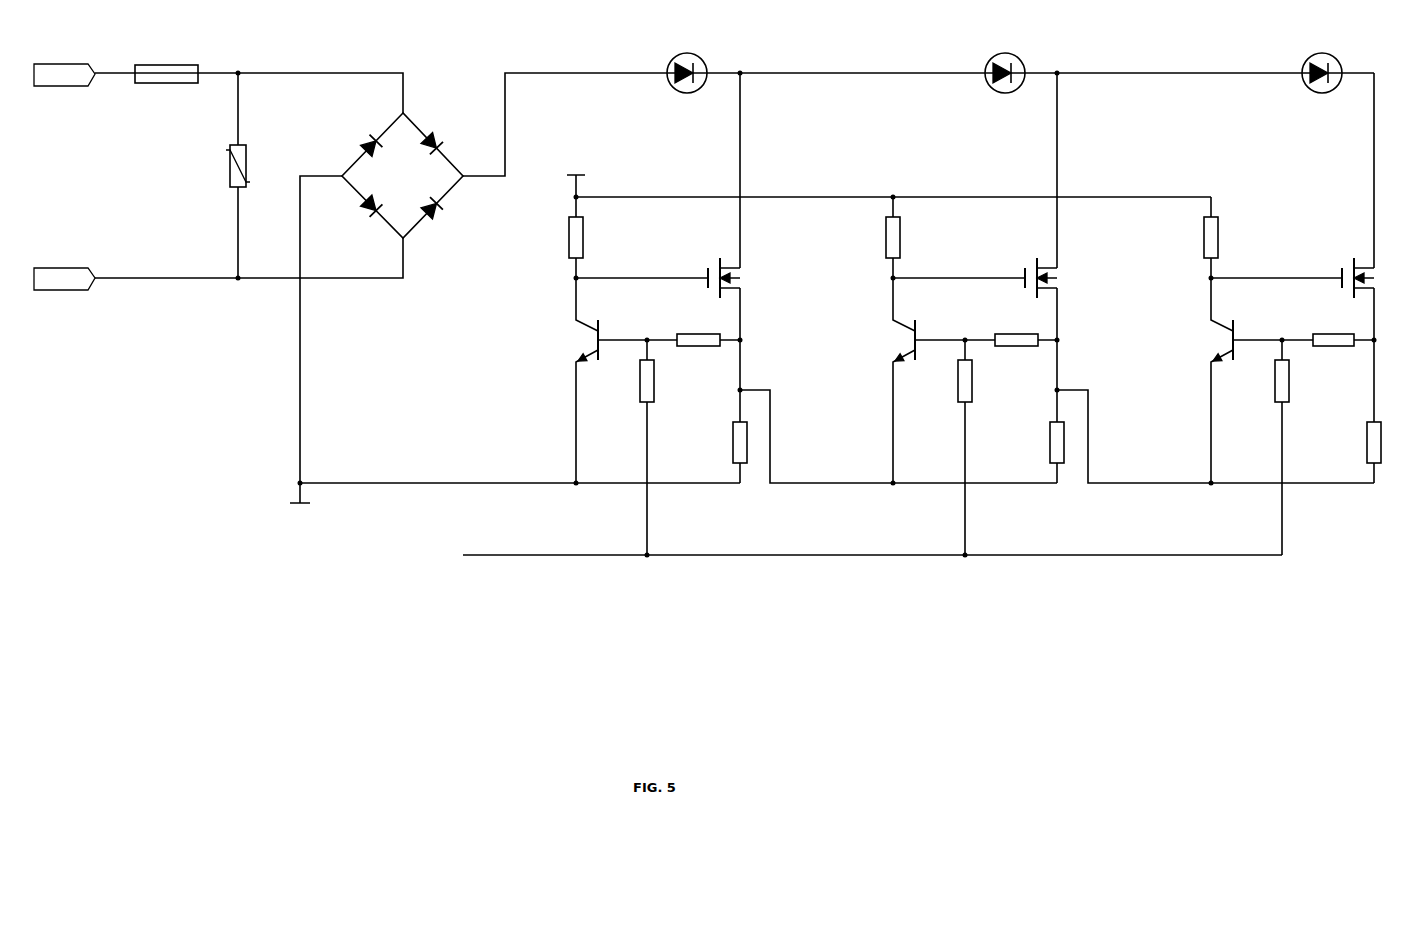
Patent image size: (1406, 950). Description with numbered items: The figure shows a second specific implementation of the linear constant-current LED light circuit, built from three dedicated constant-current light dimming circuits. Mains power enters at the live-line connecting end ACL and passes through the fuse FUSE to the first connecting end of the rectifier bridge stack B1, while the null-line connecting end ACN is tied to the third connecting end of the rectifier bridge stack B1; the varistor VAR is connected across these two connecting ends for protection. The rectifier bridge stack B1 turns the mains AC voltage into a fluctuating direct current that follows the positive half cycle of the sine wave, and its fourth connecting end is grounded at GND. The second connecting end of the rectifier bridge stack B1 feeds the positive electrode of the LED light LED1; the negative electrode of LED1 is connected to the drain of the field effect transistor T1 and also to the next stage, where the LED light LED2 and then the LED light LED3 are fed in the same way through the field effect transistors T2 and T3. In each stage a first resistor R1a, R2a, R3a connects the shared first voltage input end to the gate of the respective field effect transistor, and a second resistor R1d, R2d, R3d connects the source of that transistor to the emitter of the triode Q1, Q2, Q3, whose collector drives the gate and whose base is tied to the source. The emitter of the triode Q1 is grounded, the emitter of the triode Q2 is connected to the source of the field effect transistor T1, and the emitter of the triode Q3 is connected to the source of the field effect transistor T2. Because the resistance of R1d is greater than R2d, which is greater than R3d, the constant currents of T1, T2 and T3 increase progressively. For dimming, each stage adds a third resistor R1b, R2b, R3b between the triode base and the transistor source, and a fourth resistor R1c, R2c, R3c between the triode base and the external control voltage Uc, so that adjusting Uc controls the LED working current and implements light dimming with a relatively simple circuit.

The AC mains live-line connecting end ACL is at (64, 75).
The AC mains null-line connecting end ACN is at (64, 279).
The fuse FUSE is at (166, 64).
The varistor VAR is at (214, 175).
The rectifier bridge stack B1 is at (403, 174).
The ground GND is at (299, 502).
The external control voltage Uc is at (872, 542).
The LED light LED1 is at (689, 87).
The LED light LED2 is at (1007, 87).
The LED light LED3 is at (1324, 87).
The field effect transistor T1 is at (672, 231).
The field effect transistor T2 is at (989, 231).
The field effect transistor T3 is at (1306, 231).
The triode Q1 is at (576, 380).
The triode Q2 is at (893, 380).
The triode Q3 is at (1211, 380).
The first resistor R1a is at (588, 237).
The third resistor R1b is at (669, 331).
The fourth resistor R1c is at (660, 447).
The second resistor R1d is at (721, 436).
The first resistor R2a is at (905, 237).
The third resistor R2b is at (986, 331).
The fourth resistor R2c is at (978, 447).
The second resistor R2d is at (1038, 436).
The first resistor R3a is at (1223, 237).
The third resistor R3b is at (1303, 331).
The fourth resistor R3c is at (1295, 447).
The second resistor R3d is at (1355, 436).